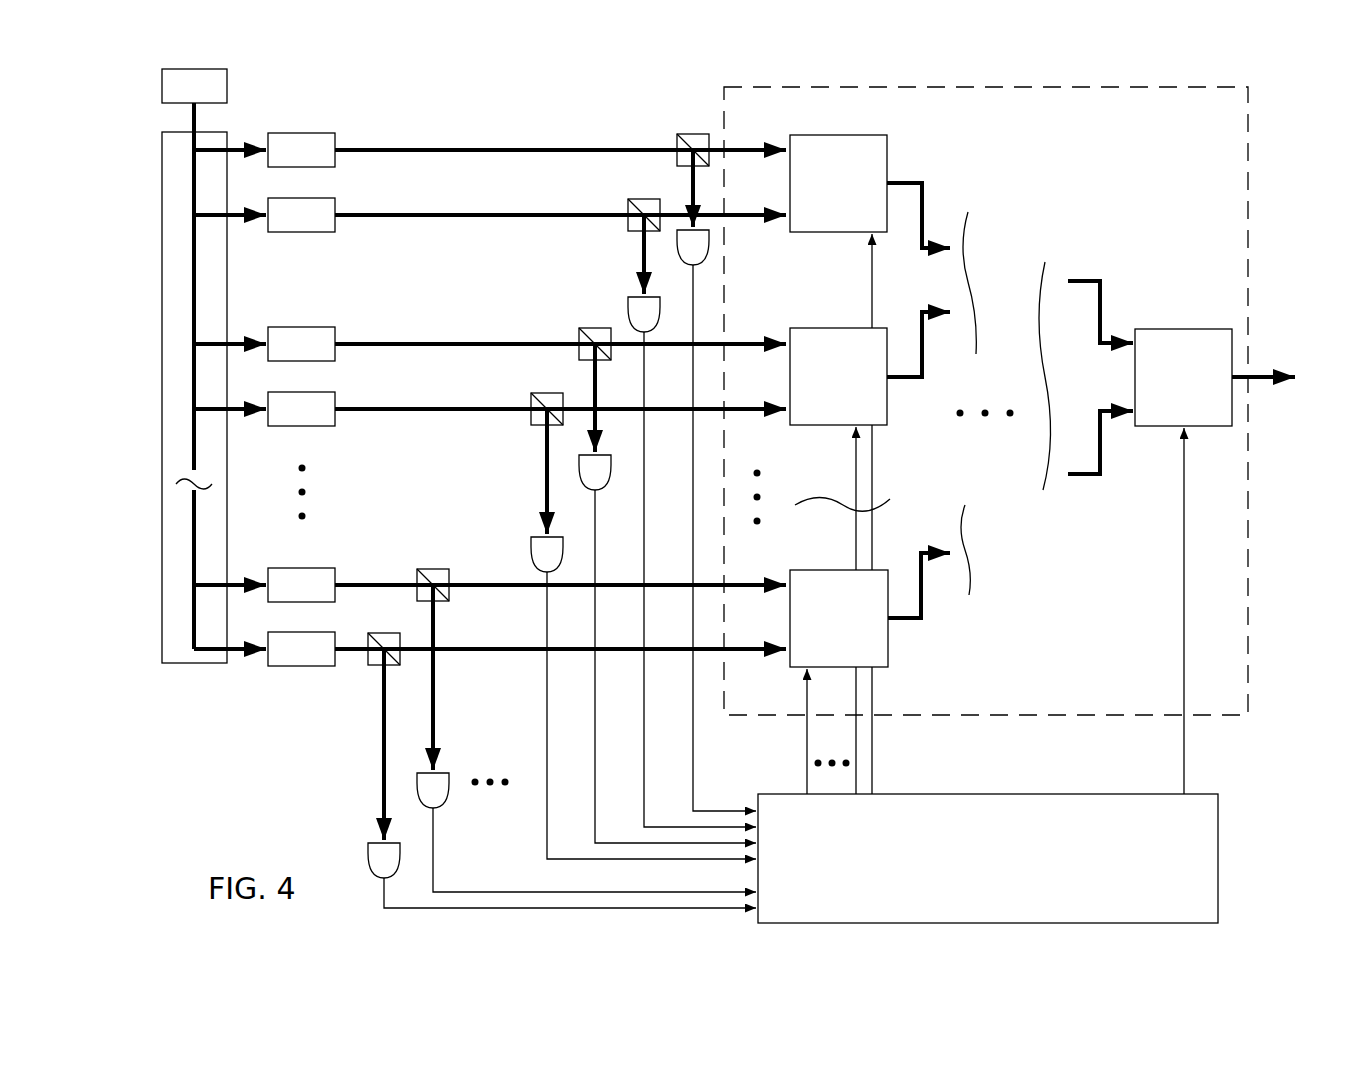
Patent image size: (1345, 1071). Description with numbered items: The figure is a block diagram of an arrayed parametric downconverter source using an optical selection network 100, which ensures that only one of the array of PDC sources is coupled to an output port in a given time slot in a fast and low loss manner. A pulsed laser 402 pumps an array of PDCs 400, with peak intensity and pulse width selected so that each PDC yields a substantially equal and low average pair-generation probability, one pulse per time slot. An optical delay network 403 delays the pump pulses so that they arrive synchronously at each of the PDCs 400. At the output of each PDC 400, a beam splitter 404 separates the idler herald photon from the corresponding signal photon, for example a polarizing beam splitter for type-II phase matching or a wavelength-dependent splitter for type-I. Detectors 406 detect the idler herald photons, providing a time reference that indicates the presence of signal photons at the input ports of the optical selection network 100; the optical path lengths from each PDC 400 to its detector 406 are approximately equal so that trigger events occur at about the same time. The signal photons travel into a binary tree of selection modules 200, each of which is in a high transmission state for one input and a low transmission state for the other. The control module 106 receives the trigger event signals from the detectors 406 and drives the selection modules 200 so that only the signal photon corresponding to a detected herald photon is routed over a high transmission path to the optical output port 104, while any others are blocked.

The optical selection network 100 is at (986, 401).
The optical output port 104 is at (1275, 400).
The control module 106 is at (988, 858).
The selection module 200 is at (1011, 464).
The parametric downconverter (PDC) 400 is at (527, 399).
The pulsed laser 402 is at (194, 86).
The optical delay network 403 is at (195, 664).
The beam splitter 404 is at (701, 133).
The detector 406 is at (708, 253).